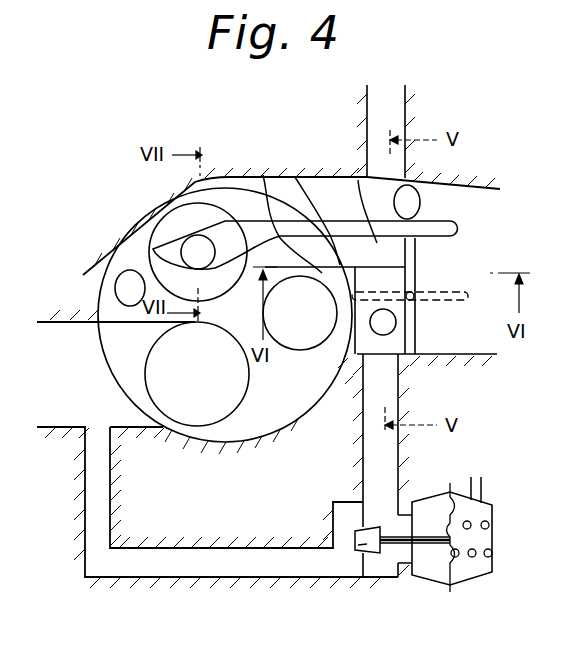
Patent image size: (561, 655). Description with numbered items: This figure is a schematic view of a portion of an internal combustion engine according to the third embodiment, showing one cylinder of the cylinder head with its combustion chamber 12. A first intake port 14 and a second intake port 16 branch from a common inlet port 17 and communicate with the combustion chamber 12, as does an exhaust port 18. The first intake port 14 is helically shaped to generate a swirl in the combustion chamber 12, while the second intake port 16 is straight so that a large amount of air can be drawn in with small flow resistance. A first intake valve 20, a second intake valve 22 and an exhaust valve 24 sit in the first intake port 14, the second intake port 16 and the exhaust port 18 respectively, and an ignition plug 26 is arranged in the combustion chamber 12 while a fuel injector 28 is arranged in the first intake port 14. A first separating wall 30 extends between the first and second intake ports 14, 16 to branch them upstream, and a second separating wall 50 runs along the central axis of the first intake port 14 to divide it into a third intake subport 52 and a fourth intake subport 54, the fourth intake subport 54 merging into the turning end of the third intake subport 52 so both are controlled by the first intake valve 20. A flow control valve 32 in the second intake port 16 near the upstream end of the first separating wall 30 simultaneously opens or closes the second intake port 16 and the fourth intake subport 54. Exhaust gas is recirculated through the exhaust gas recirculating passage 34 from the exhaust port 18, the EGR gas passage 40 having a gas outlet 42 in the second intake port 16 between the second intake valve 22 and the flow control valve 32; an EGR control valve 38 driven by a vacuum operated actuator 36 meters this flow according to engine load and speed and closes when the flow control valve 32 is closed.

The combustion chamber 12 is at (127, 243).
The first intake port 14 is at (472, 200).
The second intake port 16 is at (352, 347).
The common inlet port 17 is at (487, 225).
The exhaust port 18 is at (62, 337).
The first intake valve 20 is at (170, 222).
The second intake valve 22 is at (316, 324).
The exhaust valve 24 is at (213, 389).
The ignition plug 26 is at (122, 283).
The fuel injector 28 is at (413, 195).
The first separating wall 30 is at (263, 175).
The flow control valve 32 is at (413, 333).
The exhaust gas recirculating passage 34 is at (230, 565).
The vacuum operated actuator 36 is at (475, 580).
The EGR control valve 38 is at (370, 553).
The EGR gas passage 40 is at (397, 470).
The gas outlet 42 is at (380, 335).
The second separating wall 50 is at (295, 177).
The third intake subport 52 is at (330, 190).
The fourth intake subport 54 is at (358, 180).